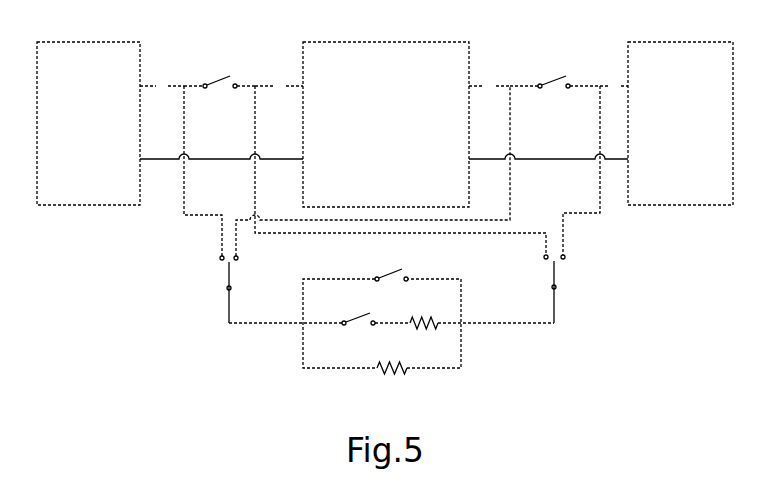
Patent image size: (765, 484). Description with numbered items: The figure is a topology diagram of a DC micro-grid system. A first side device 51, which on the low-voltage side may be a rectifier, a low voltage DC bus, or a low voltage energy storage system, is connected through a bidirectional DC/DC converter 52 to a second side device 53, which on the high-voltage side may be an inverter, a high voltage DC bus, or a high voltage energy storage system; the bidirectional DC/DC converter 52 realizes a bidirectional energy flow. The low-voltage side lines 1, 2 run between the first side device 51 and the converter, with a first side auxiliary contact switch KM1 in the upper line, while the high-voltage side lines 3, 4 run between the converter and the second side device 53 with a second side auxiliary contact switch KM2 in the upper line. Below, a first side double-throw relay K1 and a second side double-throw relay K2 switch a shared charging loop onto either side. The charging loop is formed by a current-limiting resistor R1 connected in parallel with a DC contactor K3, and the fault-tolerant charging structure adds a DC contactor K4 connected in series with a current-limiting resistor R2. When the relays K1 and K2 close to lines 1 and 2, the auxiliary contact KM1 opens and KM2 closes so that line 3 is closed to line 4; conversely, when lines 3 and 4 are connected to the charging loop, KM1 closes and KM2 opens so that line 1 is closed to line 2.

The first side device 51 is at (88, 123).
The bidirectional DC/DC converter 52 is at (386, 124).
The second side device 53 is at (680, 123).
The low-voltage side line 1 is at (162, 87).
The low-voltage side line 2 is at (279, 87).
The high-voltage side line 3 is at (489, 87).
The high-voltage side line 4 is at (614, 87).
The first side auxiliary contact switch KM1 is at (219, 93).
The second side auxiliary contact switch KM2 is at (555, 93).
The first side double-throw relay K1 is at (237, 289).
The second side double-throw relay K2 is at (562, 289).
The DC contactor K3 is at (391, 286).
The DC contactor K4 is at (376, 330).
The current-limiting resistor R1 is at (392, 376).
The current-limiting resistor R2 is at (424, 332).